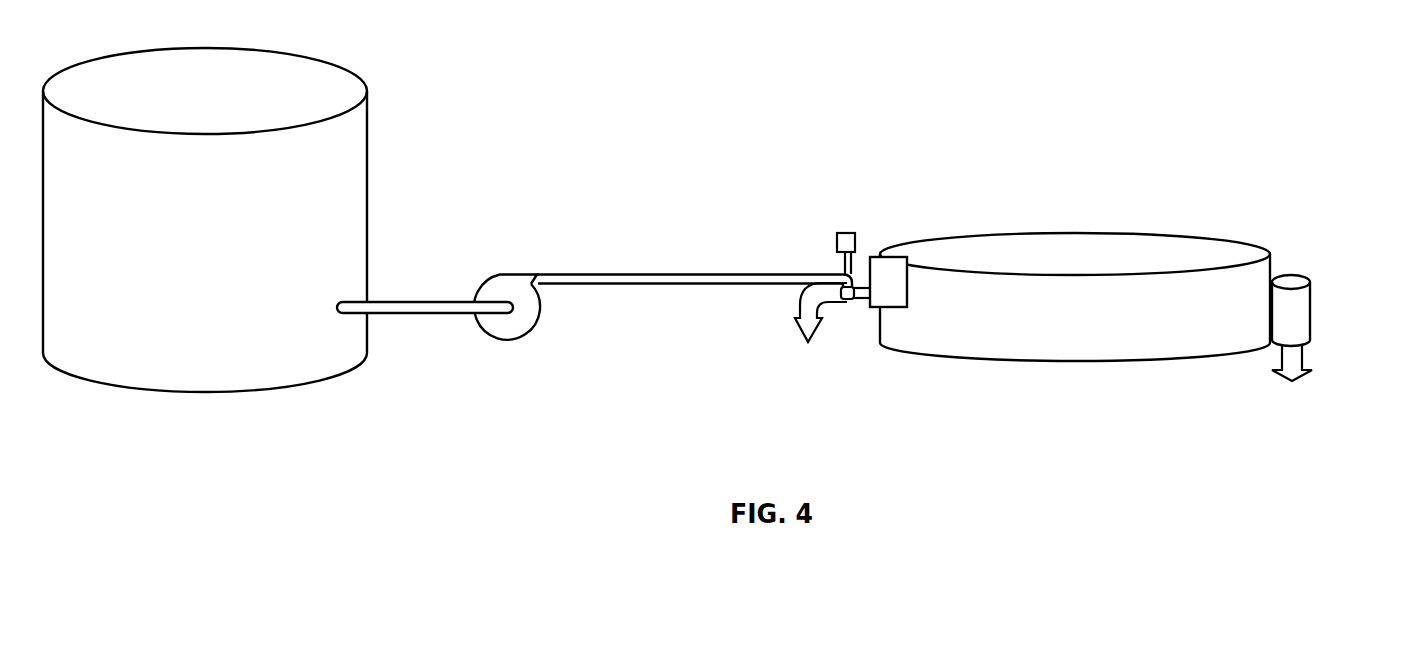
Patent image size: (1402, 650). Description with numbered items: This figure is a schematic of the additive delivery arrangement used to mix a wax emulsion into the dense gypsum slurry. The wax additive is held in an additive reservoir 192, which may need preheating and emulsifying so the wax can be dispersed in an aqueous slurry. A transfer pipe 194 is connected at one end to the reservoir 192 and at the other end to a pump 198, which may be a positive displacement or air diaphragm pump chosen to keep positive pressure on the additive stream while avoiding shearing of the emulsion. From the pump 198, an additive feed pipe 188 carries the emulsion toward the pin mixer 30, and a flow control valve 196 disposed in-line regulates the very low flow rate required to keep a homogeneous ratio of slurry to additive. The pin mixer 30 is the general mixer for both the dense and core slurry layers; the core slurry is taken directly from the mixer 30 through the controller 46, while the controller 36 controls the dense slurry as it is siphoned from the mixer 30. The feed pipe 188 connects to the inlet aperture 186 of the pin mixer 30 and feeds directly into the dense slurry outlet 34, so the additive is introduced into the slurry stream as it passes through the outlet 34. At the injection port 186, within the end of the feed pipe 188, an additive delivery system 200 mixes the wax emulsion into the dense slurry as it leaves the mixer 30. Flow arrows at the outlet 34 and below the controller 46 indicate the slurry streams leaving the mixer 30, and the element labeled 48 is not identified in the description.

The additive reservoir 192 is at (366, 184).
The transfer pipe 194 is at (457, 317).
The pump 198 is at (513, 330).
The additive feed pipe 188 is at (636, 279).
The flow control valve 196 is at (843, 237).
The additive delivery system 200 is at (858, 287).
The controller 36 is at (877, 257).
The dense slurry outlet 34 is at (800, 328).
The inlet aperture 186 is at (849, 299).
The pin mixer 30 is at (1110, 353).
The controller 46 is at (1305, 318).
The outlet flow 48 is at (1297, 358).